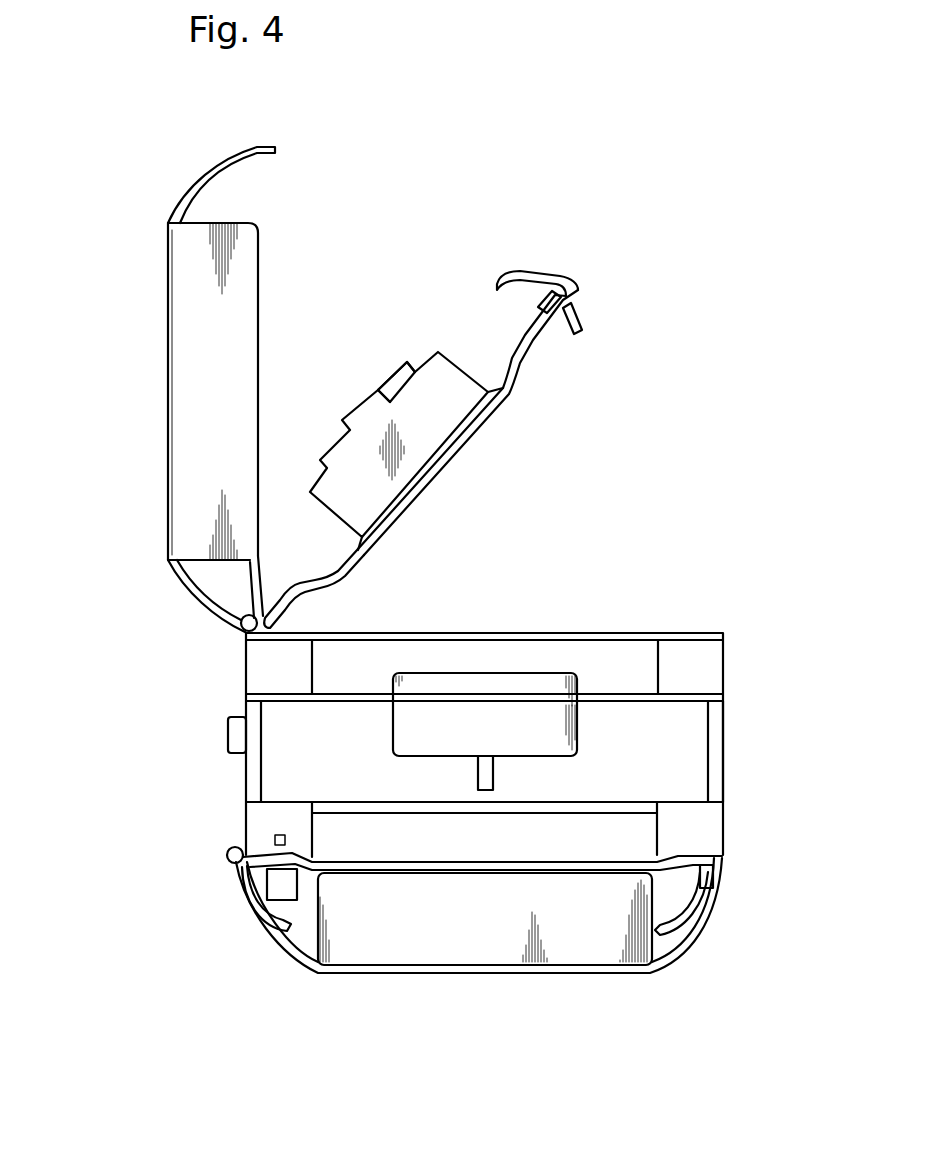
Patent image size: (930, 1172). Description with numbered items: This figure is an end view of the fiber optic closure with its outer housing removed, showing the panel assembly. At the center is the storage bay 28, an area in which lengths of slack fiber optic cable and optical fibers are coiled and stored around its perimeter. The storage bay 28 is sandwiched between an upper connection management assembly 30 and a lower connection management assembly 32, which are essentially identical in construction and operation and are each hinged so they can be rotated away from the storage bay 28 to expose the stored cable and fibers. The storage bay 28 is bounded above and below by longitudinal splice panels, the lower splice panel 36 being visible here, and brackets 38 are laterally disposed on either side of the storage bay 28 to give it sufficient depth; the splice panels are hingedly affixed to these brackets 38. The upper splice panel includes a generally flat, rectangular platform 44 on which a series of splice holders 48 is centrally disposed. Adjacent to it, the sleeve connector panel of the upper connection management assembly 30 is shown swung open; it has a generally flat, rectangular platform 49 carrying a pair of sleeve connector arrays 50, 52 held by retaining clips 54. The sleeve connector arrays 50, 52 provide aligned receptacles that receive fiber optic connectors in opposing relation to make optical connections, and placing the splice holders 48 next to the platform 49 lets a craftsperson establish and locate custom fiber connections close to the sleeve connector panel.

The storage bay 28 is at (632, 781).
The upper connection management assembly 30 is at (128, 386).
The lower connection management assembly 32 is at (220, 808).
The lower longitudinal splice panel 36 is at (523, 802).
The brackets 38 is at (246, 781).
The platform 44 is at (622, 695).
The splice holders 48 is at (518, 672).
The platform 49 is at (520, 385).
The sleeve connector array 50 is at (406, 406).
The sleeve connector array 52 is at (436, 355).
The retaining clips 54 is at (390, 375).